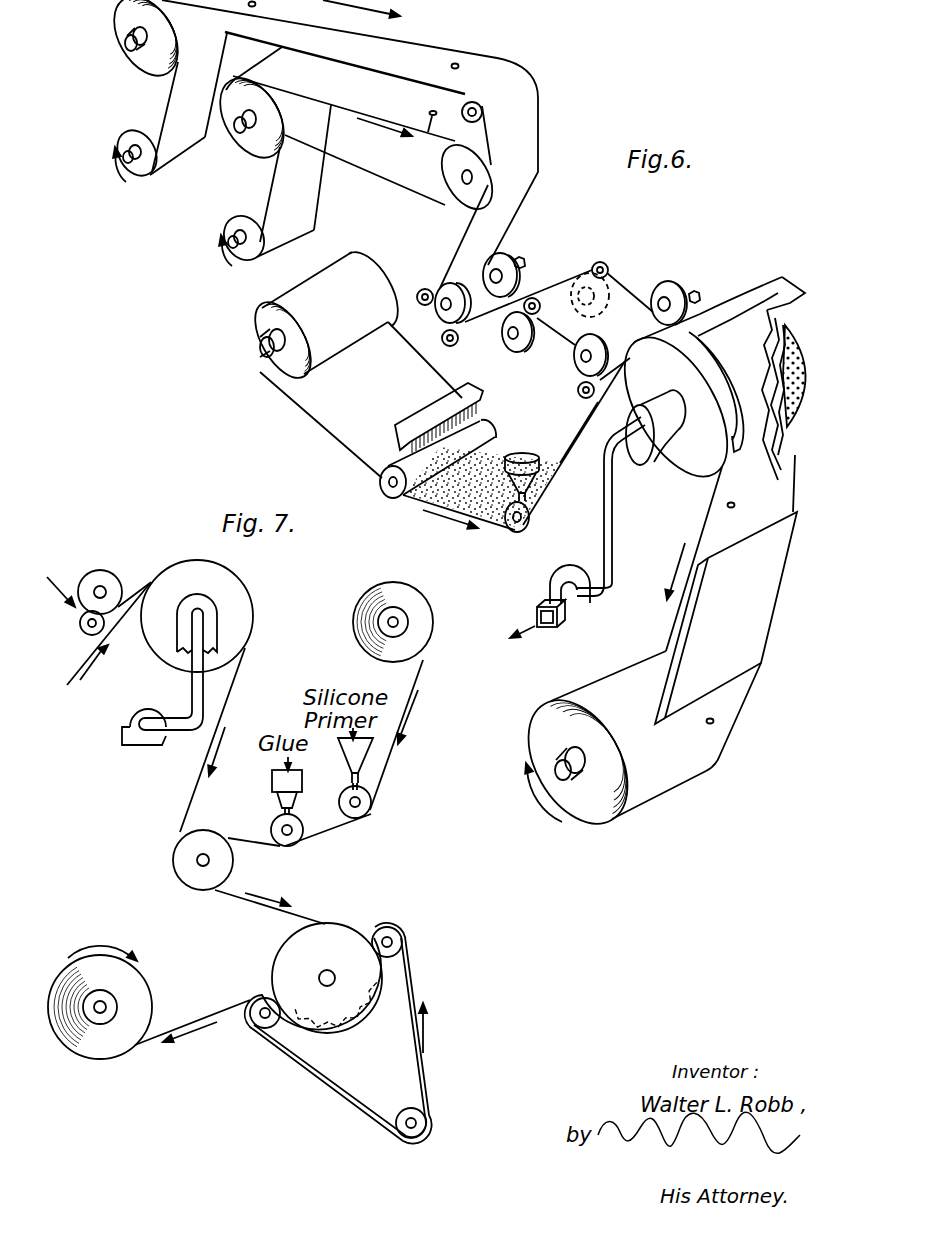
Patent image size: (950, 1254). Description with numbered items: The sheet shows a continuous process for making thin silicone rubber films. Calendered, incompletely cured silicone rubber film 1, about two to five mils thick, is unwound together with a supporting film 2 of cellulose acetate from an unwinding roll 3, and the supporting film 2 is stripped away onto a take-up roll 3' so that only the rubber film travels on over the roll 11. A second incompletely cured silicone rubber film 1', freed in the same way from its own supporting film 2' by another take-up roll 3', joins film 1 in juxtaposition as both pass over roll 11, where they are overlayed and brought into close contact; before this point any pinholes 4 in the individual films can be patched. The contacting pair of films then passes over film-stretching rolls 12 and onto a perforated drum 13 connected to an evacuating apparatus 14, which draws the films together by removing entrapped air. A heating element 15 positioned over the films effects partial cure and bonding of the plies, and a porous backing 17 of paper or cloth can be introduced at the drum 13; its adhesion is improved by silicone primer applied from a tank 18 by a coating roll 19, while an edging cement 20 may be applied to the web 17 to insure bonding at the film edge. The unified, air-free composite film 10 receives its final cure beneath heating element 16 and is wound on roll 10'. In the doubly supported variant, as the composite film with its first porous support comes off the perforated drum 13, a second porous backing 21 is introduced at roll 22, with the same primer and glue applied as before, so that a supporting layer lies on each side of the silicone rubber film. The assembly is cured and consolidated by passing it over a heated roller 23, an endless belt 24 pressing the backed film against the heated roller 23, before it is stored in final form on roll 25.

In FIG. 6, the silicone rubber film 1 is at (350, 132).
In FIG. 6, the second silicone rubber film 1' is at (362, 182).
In FIG. 6, the supporting film 2 is at (172, 104).
In FIG. 6, the supporting film 2' is at (269, 152).
In FIG. 6, the unwinding roll 3 is at (138, 43).
In FIG. 6, the take-up roll 3' is at (190, 195).
In FIG. 6, the pinholes 4 is at (458, 64).
In FIG. 6, the composite film 10 is at (656, 643).
In FIG. 6, the wind-up roll 10' is at (578, 775).
In FIG. 6, the roll 11 is at (452, 187).
In FIG. 6, the film-stretching rolls 12 is at (443, 288).
In FIG. 7, the film-stretching rolls 12 is at (105, 578).
In FIG. 6, the perforated drum 13 is at (815, 357).
In FIG. 7, the perforated drum 13 is at (246, 580).
In FIG. 6, the evacuating apparatus 14 is at (556, 577).
In FIG. 7, the evacuating apparatus 14 is at (160, 746).
In FIG. 6, the heating element 15 is at (780, 295).
In FIG. 6, the heating element 16 is at (793, 552).
In FIG. 6, the porous backing 17 is at (317, 410).
In FIG. 7, the porous backing 17 is at (88, 657).
In FIG. 6, the tank 18 is at (395, 430).
In FIG. 6, the coating roll 19 is at (382, 482).
In FIG. 6, the edging cement 20 is at (527, 453).
In FIG. 7, the second porous backing 21 is at (420, 668).
In FIG. 7, the roll 22 is at (238, 862).
In FIG. 7, the heated roller 23 is at (332, 935).
In FIG. 7, the endless belt 24 is at (415, 970).
In FIG. 7, the roll 25 is at (90, 1043).